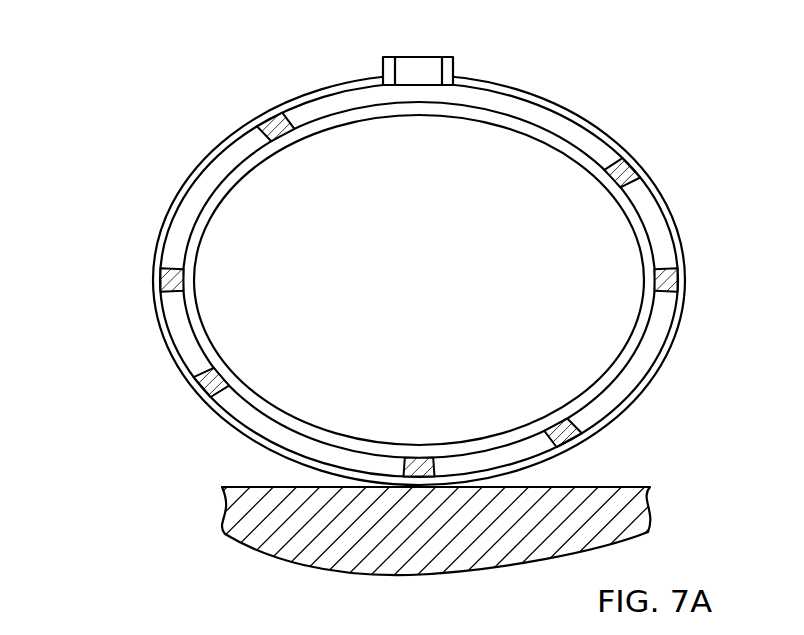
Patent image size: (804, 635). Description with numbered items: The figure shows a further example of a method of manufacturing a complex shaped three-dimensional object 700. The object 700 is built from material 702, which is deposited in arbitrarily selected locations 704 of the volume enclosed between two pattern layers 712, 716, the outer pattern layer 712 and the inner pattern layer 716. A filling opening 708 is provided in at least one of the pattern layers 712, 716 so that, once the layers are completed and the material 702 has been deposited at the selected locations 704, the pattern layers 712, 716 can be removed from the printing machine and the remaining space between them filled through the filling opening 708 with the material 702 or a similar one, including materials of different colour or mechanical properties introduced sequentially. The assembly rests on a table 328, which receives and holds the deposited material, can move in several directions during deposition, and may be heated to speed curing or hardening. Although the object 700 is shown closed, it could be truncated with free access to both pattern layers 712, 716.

The complex shaped 3D object 700 is at (195, 76).
The material 702 is at (207, 390).
The arbitrarily selected locations of volume 704 is at (642, 185).
The filling opening 708 is at (438, 57).
The pattern layer 712 is at (652, 388).
The pattern layer 716 is at (592, 382).
The table 328 is at (231, 524).